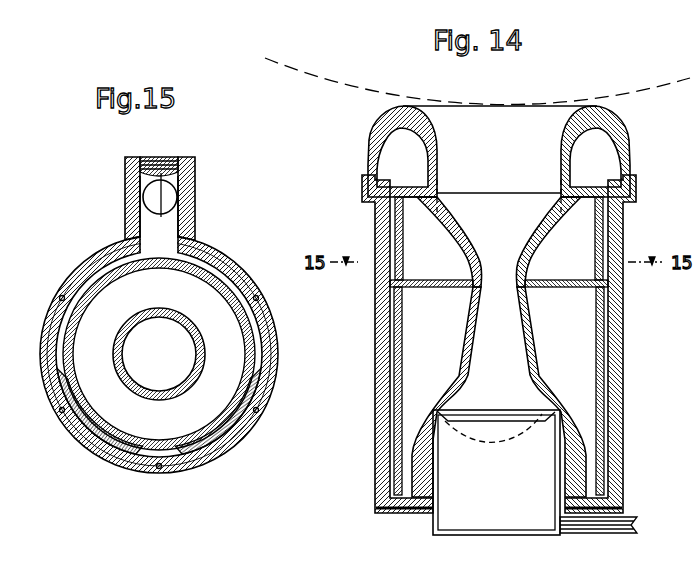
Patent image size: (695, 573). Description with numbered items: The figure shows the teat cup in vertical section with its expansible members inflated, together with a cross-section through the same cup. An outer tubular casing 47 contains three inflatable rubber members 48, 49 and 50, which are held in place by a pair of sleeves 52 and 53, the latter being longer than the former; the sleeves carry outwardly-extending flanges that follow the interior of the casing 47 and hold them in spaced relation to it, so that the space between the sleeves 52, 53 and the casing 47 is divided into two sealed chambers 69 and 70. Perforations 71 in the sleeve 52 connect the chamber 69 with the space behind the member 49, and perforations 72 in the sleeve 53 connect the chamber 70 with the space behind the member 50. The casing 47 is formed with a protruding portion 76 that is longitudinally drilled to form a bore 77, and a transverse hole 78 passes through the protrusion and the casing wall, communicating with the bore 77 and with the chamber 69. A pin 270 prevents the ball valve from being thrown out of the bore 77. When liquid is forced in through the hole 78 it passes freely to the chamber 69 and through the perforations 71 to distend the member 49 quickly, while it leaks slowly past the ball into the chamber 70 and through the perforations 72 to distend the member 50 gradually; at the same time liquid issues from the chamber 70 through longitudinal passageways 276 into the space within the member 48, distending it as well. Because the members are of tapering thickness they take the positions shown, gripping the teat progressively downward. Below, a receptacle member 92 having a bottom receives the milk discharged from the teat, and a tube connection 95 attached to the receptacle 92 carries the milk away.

In FIG. 14, the outer tubular casing 47 is at (383, 326).
In FIG. 15, the outer tubular casing 47 is at (44, 370).
In FIG. 14, the inflatable rubber member 48 is at (570, 120).
In FIG. 14, the inflatable rubber member 49 is at (553, 218).
In FIG. 15, the inflatable rubber member 49 is at (162, 318).
In FIG. 14, the inflatable rubber member 50 is at (527, 370).
In FIG. 14, the sleeve 52 is at (406, 258).
In FIG. 15, the sleeve 52 is at (69, 380).
In FIG. 14, the sleeve 53 is at (403, 344).
In FIG. 14, the chamber 69 is at (394, 235).
In FIG. 15, the chamber 69 is at (117, 448).
In FIG. 14, the chamber 70 is at (391, 387).
In FIG. 14, the perforations 71 is at (601, 269).
In FIG. 15, the perforations 71 is at (238, 307).
In FIG. 14, the perforations 72 is at (580, 416).
In FIG. 15, the protruding portion 76 is at (127, 170).
In FIG. 15, the longitudinal bore 77 is at (171, 197).
In FIG. 15, the transverse hole 78 is at (160, 236).
In FIG. 14, the receptacle member 92 is at (436, 460).
In FIG. 14, the tube connection 95 is at (612, 522).
In FIG. 15, the pin 270 is at (148, 191).
In FIG. 15, the longitudinal passageways 276 is at (59, 413).